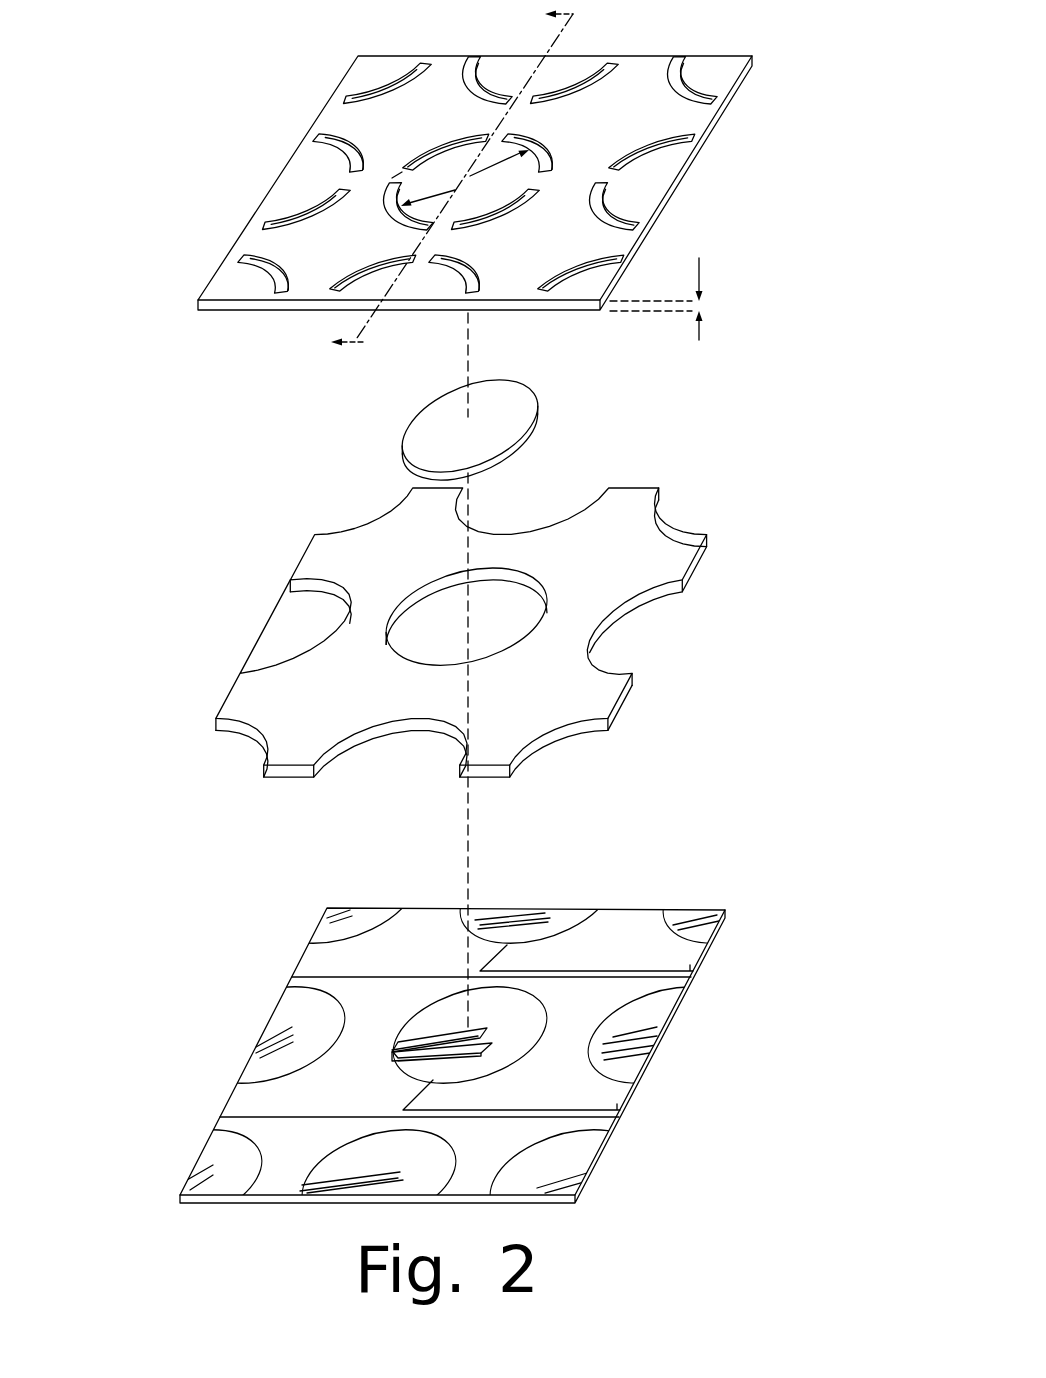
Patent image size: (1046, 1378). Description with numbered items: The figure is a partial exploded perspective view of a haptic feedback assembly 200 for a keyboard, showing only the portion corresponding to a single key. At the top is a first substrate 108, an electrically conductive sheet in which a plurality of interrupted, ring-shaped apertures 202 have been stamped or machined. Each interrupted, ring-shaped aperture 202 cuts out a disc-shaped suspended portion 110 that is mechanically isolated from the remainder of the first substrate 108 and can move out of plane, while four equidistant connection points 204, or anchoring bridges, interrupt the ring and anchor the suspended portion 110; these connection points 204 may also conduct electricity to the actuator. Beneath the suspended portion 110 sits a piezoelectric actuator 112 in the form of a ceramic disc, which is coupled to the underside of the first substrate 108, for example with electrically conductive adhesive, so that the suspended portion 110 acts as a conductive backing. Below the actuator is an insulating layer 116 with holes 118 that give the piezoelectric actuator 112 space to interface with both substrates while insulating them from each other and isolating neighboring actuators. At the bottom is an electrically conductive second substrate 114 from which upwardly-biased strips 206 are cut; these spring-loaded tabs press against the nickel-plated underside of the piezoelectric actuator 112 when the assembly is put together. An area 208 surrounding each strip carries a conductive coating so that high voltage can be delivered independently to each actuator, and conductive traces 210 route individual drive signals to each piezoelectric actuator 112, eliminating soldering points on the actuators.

The haptic feedback assembly 200 is at (162, 55).
The first substrate 108 is at (743, 50).
The suspended portion 110 is at (472, 175).
The interrupted, ring-shaped aperture 202 is at (430, 150).
The connection points 204 is at (403, 177).
The piezoelectric actuator 112 is at (417, 412).
The insulating layer 116 is at (718, 449).
The holes 118 is at (466, 617).
The second substrate 114 is at (712, 882).
The upwardly-biased strips 206 is at (472, 1028).
The area 208 is at (432, 1013).
The conductive traces 210 is at (403, 1110).